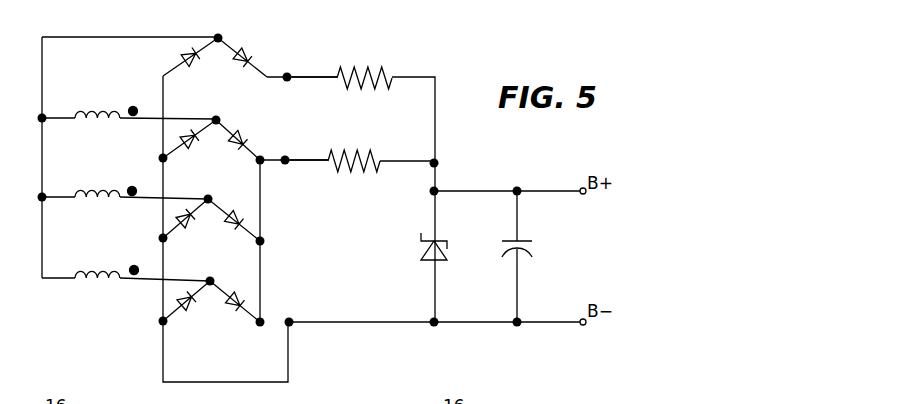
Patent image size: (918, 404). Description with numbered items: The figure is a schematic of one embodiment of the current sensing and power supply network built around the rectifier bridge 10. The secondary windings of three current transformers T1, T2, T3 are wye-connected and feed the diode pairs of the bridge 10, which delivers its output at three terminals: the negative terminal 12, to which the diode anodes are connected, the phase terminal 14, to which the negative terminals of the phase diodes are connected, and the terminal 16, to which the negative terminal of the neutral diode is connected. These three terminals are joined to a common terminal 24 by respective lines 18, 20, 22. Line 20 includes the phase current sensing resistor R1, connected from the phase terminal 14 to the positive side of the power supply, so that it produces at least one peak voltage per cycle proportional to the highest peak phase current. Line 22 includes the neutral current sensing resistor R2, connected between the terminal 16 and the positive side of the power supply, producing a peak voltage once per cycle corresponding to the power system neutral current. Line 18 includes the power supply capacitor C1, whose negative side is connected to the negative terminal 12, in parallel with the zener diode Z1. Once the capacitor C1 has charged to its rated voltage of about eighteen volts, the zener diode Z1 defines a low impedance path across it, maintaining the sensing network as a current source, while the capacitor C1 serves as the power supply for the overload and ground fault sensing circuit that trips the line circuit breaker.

The bridge 10 is at (221, 347).
The common line or terminal 12 is at (293, 312).
The common line or terminal 14 is at (288, 149).
The line or terminal 16 is at (288, 67).
The line 18 is at (330, 322).
The line 20 is at (324, 161).
The line 22 is at (330, 78).
The common terminal 24 is at (446, 163).
The current transformer T1 is at (106, 104).
The current transformer T2 is at (106, 183).
The current transformer T3 is at (107, 264).
The phase current sensing resistor R1 is at (355, 150).
The neutral current sensing resistor R2 is at (364, 67).
The zener diode Z1 is at (420, 246).
The power supply capacitor C1 is at (532, 256).